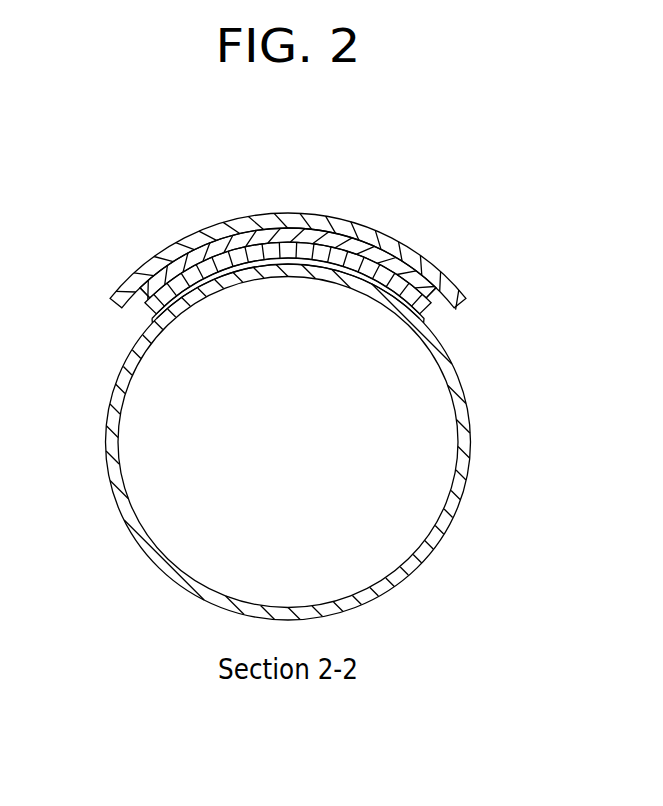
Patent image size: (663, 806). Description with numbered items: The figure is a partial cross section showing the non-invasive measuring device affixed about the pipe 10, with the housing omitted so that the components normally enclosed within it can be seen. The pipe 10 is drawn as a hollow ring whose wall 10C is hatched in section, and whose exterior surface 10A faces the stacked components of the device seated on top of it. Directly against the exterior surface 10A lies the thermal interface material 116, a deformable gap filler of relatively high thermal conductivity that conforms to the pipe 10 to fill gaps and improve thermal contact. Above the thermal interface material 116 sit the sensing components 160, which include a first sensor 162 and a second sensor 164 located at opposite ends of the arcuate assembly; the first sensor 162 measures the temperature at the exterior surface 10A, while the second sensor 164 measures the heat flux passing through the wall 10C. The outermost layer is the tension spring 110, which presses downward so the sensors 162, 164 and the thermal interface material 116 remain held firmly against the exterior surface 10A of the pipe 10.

The pipe 10 is at (174, 579).
The exterior surface 10A is at (418, 314).
The wall 10C is at (447, 528).
The tension spring 110 is at (134, 254).
The thermal interface material 116 is at (143, 320).
The sensing components 160 is at (362, 240).
The first sensor 162 is at (136, 303).
The second sensor 164 is at (446, 307).